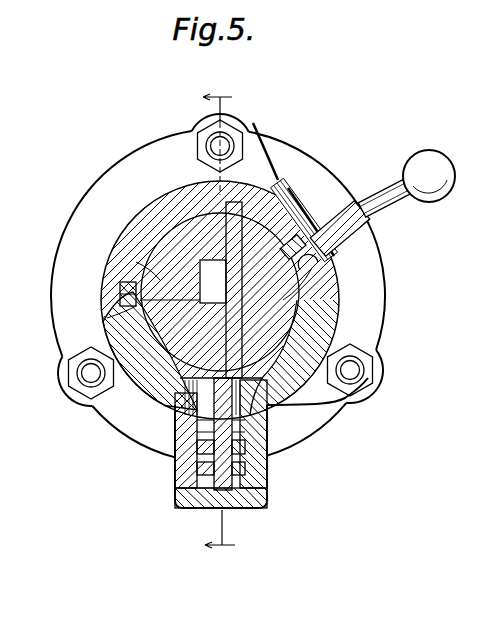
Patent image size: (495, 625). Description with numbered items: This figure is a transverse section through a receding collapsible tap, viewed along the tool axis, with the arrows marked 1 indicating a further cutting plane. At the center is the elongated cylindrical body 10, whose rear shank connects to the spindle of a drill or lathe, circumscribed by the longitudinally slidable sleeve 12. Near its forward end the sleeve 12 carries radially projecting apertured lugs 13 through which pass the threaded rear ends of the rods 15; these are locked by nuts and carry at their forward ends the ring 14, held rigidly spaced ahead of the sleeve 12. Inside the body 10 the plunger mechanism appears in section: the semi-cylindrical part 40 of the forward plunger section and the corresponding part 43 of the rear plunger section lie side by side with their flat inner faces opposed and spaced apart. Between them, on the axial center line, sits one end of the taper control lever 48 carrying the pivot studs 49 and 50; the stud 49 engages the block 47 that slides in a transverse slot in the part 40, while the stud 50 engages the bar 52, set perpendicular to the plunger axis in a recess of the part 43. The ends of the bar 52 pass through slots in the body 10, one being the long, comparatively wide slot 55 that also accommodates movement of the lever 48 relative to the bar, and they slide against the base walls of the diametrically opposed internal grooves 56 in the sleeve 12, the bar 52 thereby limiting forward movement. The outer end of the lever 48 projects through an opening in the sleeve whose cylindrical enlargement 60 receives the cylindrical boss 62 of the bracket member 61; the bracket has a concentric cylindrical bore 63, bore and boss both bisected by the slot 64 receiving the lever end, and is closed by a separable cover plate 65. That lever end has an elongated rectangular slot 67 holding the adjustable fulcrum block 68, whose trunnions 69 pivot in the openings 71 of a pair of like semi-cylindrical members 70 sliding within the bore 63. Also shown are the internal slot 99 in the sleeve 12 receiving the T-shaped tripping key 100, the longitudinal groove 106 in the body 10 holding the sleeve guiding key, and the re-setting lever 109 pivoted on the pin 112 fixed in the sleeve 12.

The section line 1- 1 is at (219, 322).
The body 10 is at (150, 205).
The sleeve 12 is at (148, 223).
The apertured lugs 13 is at (187, 150).
The ring 14 is at (311, 173).
The rods 15 is at (228, 142).
The semi-cylindrical part 40 is at (185, 277).
The forwardly extending part 43 is at (283, 300).
The block 47 is at (140, 268).
The taper control lever 48 is at (267, 410).
The pivot stud 49 is at (200, 300).
The pivot stud 50 is at (300, 215).
The bar 52 is at (240, 347).
The slot 55 is at (197, 337).
The internal grooves 56 is at (279, 180).
The cylindrical enlargement 60 is at (288, 383).
The bracket member 61 is at (262, 472).
The cylindrical boss 62 is at (167, 410).
The cylindrical bore 63 is at (197, 489).
The slot 64 is at (223, 480).
The cover plate 65 is at (243, 505).
The slot 67 is at (213, 491).
The adjustable fulcrum block 68 is at (200, 497).
The trunnions 69 is at (197, 447).
The semi-cylindrical members 70 is at (187, 435).
The recess or opening 71 is at (197, 470).
The slot 99 is at (107, 318).
The tripping key 100 is at (127, 287).
The longitudinal groove 106 is at (318, 268).
The re-setting lever 109 is at (387, 207).
The pin 112 is at (328, 248).